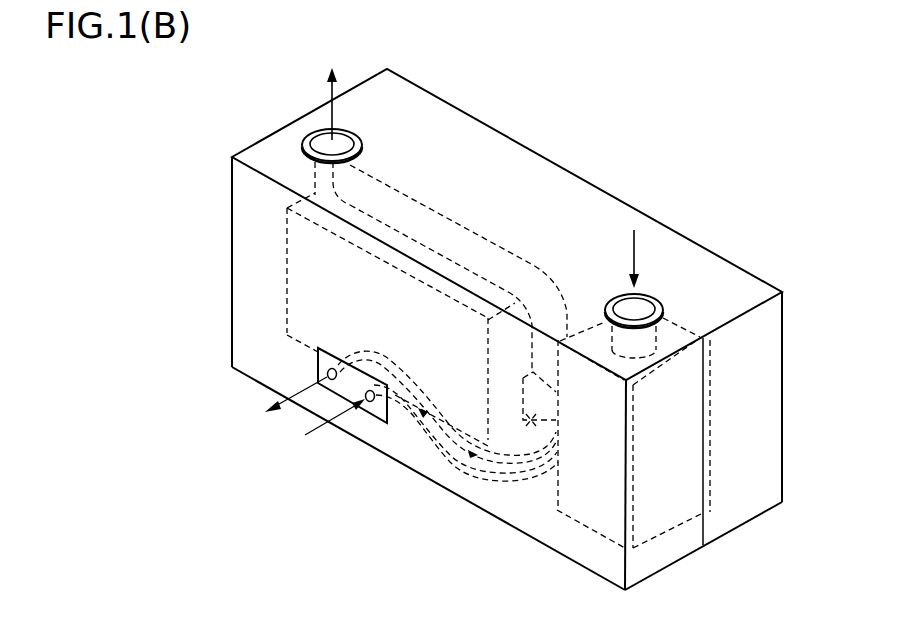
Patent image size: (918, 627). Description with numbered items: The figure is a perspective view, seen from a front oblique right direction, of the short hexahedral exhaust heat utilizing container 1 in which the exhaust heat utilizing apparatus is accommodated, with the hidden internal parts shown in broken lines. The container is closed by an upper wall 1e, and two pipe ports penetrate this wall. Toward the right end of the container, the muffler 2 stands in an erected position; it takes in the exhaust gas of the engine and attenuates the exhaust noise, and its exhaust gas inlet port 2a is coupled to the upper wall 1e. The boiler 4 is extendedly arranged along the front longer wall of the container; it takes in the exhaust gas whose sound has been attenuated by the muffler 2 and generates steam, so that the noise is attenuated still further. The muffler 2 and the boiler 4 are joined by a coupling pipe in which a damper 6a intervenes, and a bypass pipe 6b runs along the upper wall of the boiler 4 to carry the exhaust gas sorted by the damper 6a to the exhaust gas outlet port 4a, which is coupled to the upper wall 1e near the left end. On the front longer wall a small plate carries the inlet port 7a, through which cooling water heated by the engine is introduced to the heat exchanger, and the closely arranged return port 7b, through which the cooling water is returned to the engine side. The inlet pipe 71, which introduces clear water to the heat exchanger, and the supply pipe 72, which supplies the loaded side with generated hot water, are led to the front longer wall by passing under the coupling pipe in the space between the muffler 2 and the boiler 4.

The exhaust heat utilizing container 1 is at (628, 86).
The upper wall 1e is at (534, 181).
The muffler 2 is at (663, 498).
The exhaust gas inlet port 2a is at (653, 295).
The boiler 4 is at (305, 282).
The exhaust gas outlet port 4a is at (313, 140).
The damper 6a is at (523, 420).
The bypass pipe 6b is at (450, 222).
The inlet port 7a is at (375, 401).
The return port 7b is at (328, 373).
The inlet pipe 71 is at (473, 463).
The supply pipe 72 is at (432, 443).